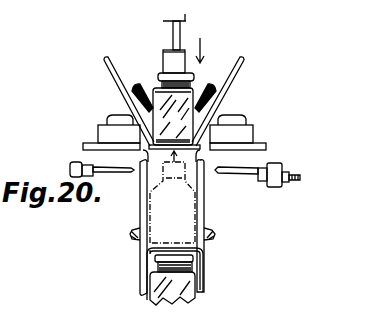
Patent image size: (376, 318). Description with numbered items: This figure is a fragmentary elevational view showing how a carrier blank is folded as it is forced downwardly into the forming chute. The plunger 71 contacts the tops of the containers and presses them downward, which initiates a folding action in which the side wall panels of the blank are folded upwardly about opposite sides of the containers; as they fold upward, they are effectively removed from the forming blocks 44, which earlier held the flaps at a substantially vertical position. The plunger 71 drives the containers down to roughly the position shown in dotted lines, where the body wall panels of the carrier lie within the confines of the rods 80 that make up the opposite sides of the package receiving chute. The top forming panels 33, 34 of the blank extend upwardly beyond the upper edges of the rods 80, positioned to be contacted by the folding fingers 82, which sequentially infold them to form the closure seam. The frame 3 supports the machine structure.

The plunger 71 is at (163, 56).
The conveyor frame 3 is at (104, 70).
The forming blocks 44 is at (110, 116).
The folding fingers 82 is at (100, 165).
The top forming panel 33 is at (142, 168).
The top forming panel 34 is at (197, 168).
The rods 80 is at (140, 266).